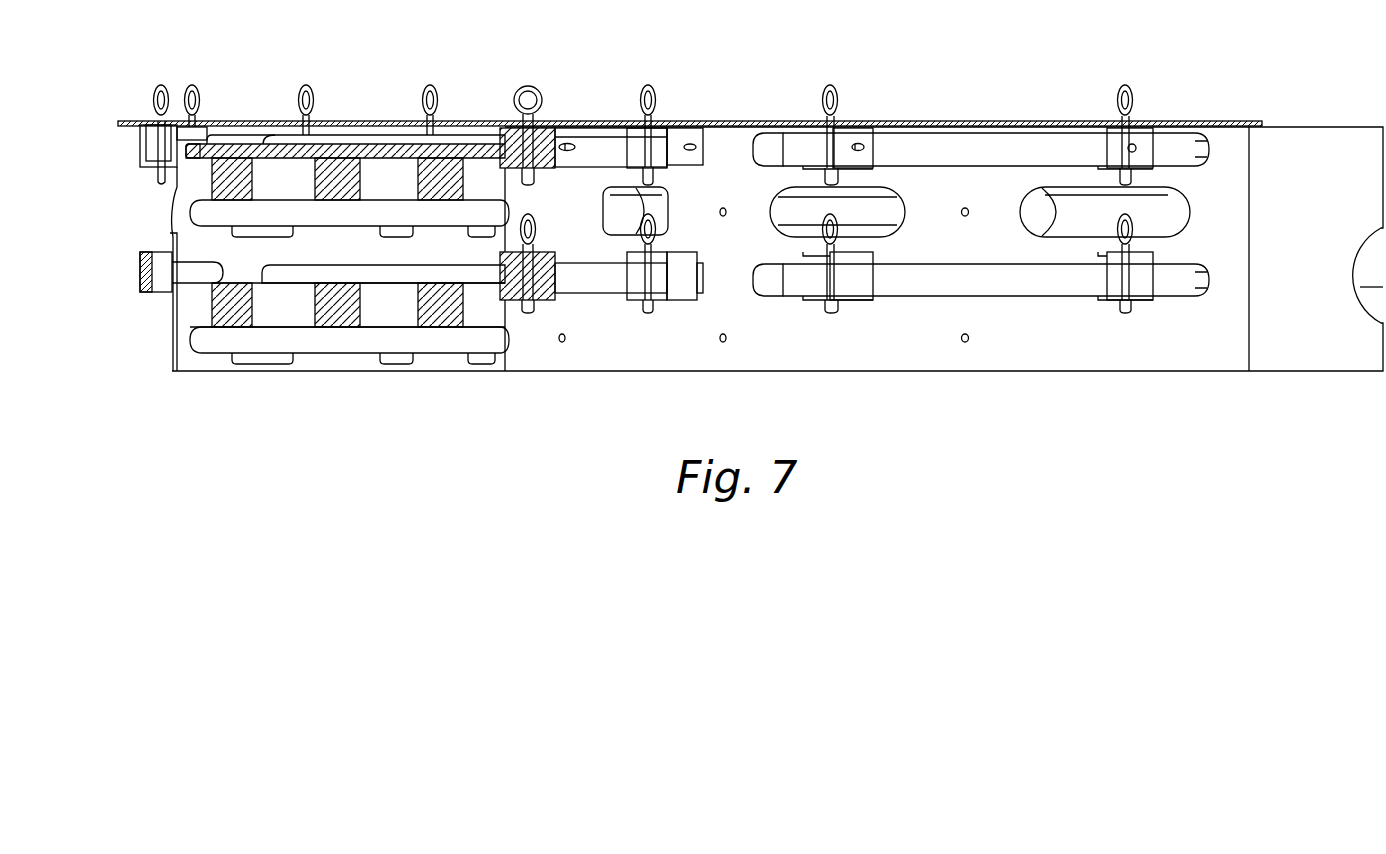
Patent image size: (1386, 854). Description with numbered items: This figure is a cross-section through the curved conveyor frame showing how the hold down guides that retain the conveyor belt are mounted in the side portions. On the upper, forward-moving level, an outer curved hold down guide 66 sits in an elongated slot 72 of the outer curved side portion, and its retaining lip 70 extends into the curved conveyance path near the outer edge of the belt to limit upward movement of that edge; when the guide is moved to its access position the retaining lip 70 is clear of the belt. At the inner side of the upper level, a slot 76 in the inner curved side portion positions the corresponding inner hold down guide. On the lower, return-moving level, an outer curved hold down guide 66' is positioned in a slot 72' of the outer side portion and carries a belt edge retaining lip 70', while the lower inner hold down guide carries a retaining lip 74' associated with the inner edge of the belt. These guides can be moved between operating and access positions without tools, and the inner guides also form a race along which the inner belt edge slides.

The outer curved hold down guide 66 is at (132, 165).
The elongated slot 72 is at (225, 111).
The retaining lip 70 is at (345, 102).
The slot 76 is at (1213, 148).
The slot 72' is at (128, 272).
The outer curved hold down guide 66' is at (155, 306).
The retaining lip 70' is at (361, 343).
The retaining lip 74' is at (345, 334).